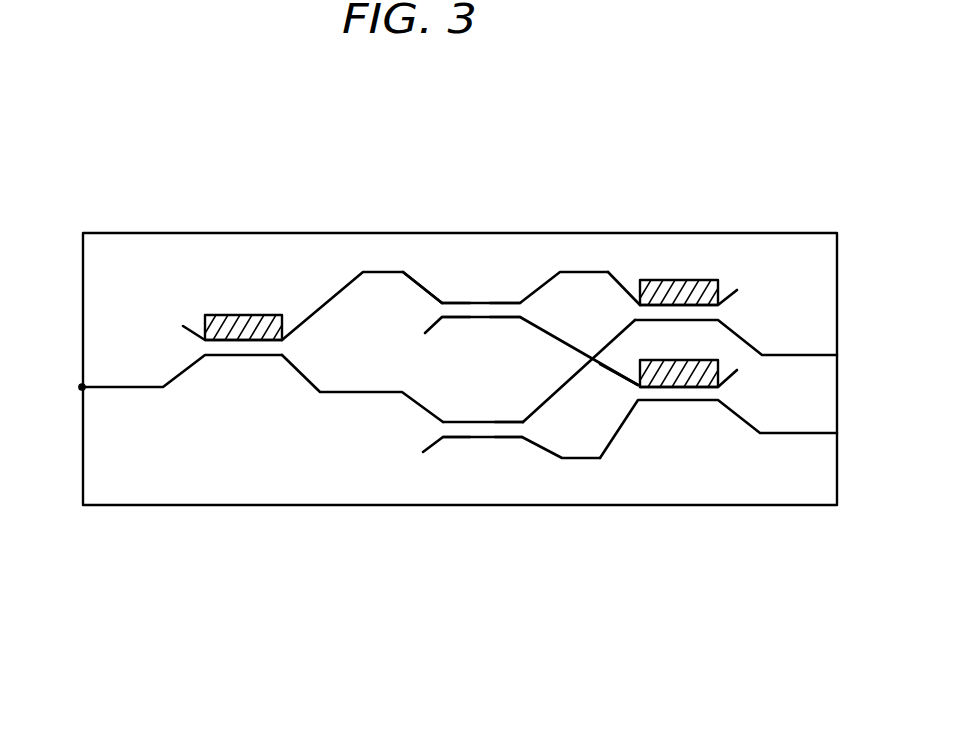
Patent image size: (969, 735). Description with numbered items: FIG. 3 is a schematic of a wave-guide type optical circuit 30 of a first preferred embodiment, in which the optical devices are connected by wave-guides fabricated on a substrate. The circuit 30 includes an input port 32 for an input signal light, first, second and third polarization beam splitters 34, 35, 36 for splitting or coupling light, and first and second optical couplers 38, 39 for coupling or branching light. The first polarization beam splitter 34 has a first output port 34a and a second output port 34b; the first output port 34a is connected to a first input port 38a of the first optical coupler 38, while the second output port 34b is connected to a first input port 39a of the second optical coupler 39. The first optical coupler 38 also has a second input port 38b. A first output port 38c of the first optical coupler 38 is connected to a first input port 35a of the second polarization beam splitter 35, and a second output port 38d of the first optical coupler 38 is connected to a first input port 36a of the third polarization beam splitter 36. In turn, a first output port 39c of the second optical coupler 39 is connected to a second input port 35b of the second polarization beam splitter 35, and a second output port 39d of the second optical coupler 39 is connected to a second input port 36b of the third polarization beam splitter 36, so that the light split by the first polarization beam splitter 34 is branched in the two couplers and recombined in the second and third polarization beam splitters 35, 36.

The wave-guide type optical circuit 30 is at (78, 87).
The input port 32 is at (84, 390).
The first polarization beam splitter 34 is at (222, 308).
The first output port 34a is at (283, 337).
The second output port 34b is at (282, 358).
The first optical coupler 38 is at (478, 298).
The first input port 38a is at (442, 302).
The second input port of first optical coupler 38b is at (423, 296).
The first output port 38c is at (520, 316).
The second output port 38d is at (514, 300).
The second polarization beam splitter 35 is at (693, 276).
The first input port 35a is at (641, 304).
The second input port of second PBS 35b is at (635, 302).
The second optical coupler 39 is at (481, 445).
The first input port 39a is at (443, 439).
The first output port 39c is at (523, 424).
The second output port 39d is at (522, 439).
The third polarization beam splitter 36 is at (688, 398).
The first input port 36a is at (641, 389).
The second input port 36b is at (638, 402).